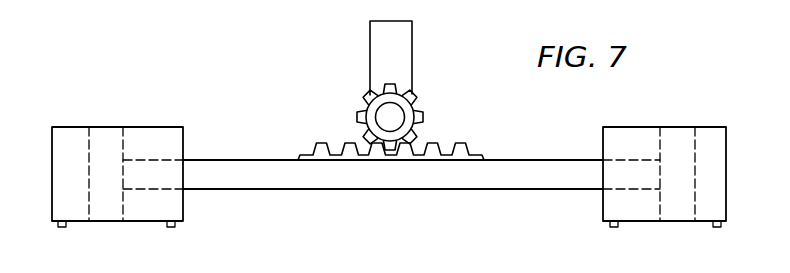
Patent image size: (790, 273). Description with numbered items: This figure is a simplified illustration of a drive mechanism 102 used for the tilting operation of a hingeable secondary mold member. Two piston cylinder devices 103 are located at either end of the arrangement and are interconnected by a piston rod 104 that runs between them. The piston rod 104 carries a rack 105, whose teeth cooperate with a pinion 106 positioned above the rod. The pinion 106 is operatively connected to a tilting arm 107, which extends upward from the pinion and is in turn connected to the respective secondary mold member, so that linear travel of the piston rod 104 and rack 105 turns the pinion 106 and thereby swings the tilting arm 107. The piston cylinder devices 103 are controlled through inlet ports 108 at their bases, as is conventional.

The drive mechanism 102 is at (319, 116).
The piston cylinder devices 103 is at (135, 133).
The piston rod 104 is at (355, 189).
The rack 105 is at (458, 143).
The pinion 106 is at (418, 113).
The tilting arm 107 is at (402, 50).
The inlet ports 108 is at (66, 223).